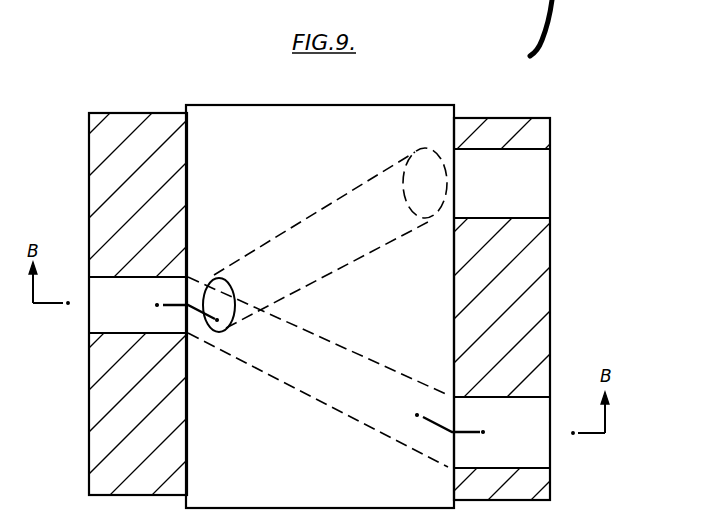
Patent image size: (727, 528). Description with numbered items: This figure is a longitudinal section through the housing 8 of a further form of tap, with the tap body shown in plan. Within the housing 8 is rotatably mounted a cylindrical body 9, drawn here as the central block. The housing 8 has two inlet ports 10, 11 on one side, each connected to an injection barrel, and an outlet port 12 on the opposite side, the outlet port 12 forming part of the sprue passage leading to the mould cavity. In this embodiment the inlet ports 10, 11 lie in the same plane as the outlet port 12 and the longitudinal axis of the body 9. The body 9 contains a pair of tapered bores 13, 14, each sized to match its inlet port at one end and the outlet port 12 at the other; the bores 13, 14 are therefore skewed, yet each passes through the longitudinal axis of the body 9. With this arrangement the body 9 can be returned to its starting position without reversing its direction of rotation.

The housing 8 is at (495, 133).
The cylindrical body 9 is at (356, 123).
The inlet port 10 is at (533, 179).
The inlet port 11 is at (535, 454).
The outlet port 12 is at (102, 326).
The bore 13 is at (285, 246).
The bore 14 is at (365, 420).